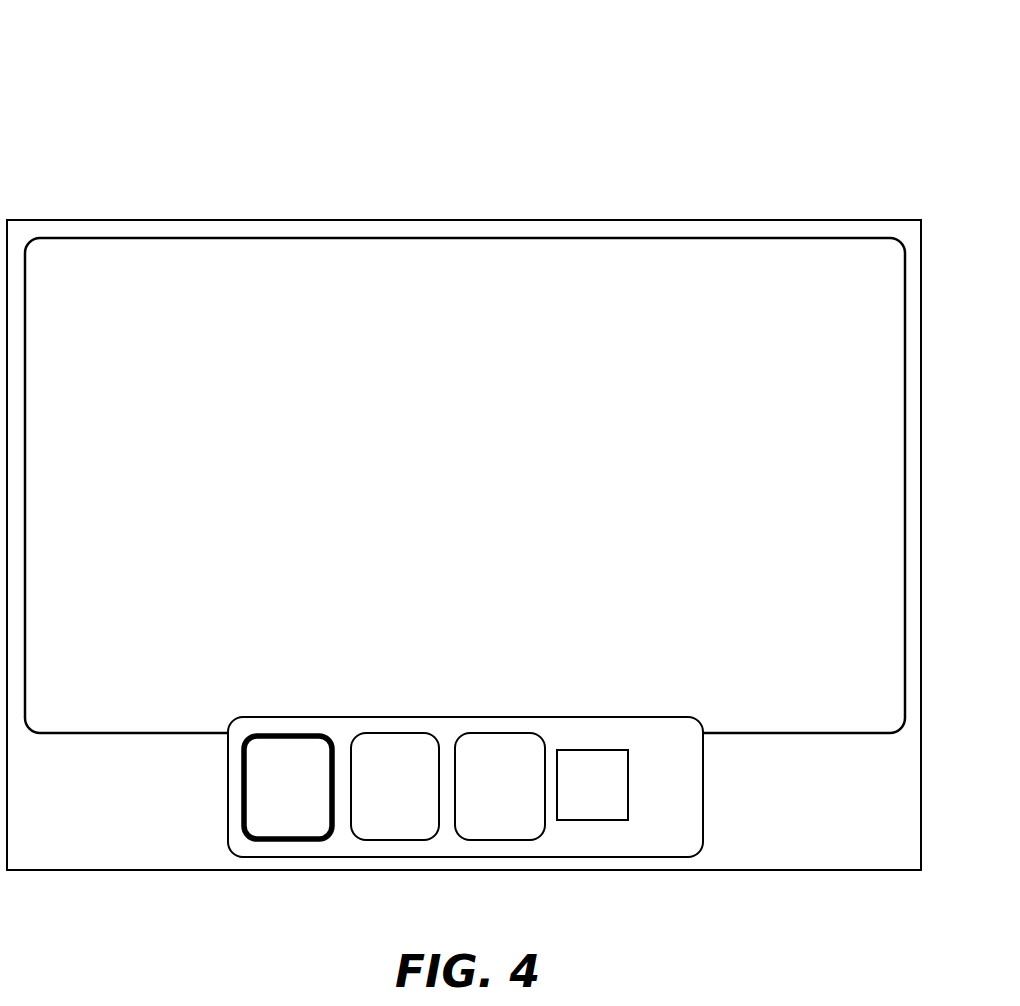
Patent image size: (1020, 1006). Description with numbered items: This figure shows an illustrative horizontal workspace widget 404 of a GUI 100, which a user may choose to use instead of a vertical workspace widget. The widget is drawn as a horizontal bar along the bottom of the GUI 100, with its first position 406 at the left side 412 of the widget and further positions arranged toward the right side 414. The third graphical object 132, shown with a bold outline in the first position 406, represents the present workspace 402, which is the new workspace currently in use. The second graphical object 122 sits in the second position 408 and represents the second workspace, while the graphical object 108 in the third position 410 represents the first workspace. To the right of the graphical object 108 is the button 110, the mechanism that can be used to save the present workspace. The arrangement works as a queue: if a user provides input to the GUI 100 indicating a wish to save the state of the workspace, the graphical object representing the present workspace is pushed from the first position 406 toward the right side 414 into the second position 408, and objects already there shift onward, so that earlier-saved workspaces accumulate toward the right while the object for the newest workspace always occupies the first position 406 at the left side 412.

The GUI 100 is at (148, 104).
The present workspace 402 is at (622, 238).
The horizontal workspace widget 404 is at (650, 857).
The third graphical object 132 is at (306, 799).
The second graphical object 122 is at (415, 796).
The graphical object 108 is at (524, 797).
The button 110 is at (611, 796).
The first position 406 is at (291, 712).
The second position 408 is at (395, 712).
The third position 410 is at (501, 711).
The left side 412 is at (228, 800).
The right side 414 is at (703, 787).